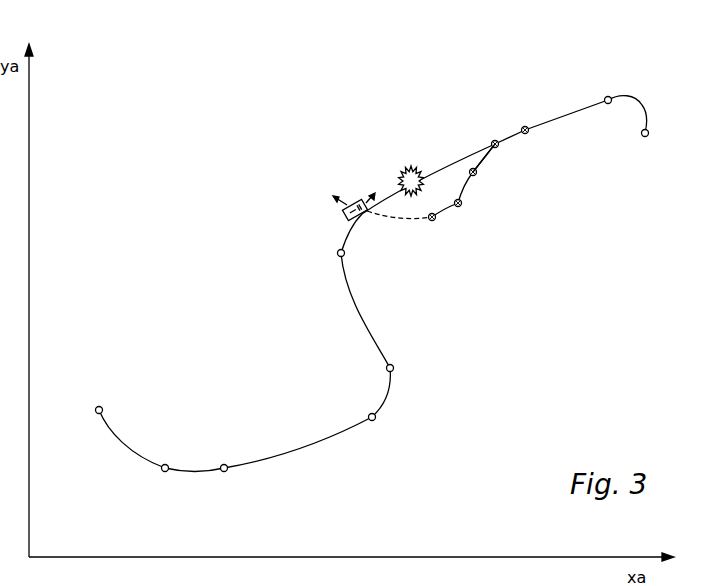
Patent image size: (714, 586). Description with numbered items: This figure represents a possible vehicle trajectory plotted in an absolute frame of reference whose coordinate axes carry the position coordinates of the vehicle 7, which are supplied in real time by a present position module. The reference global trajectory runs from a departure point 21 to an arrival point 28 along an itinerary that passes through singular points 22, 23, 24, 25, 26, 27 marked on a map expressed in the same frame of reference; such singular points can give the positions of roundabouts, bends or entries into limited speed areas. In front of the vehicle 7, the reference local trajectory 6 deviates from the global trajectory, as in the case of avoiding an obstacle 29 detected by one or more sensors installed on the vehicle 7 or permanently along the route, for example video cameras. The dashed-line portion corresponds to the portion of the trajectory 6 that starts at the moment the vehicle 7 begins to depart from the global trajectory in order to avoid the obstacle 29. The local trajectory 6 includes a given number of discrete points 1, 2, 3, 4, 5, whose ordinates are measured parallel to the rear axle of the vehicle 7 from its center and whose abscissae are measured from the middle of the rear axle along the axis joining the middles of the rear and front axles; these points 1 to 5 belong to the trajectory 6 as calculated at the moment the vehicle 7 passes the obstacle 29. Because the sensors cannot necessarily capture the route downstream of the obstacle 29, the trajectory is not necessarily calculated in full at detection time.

The discrete point 1 is at (430, 220).
The discrete point 2 is at (456, 200).
The discrete point 3 is at (472, 169).
The discrete point 4 is at (496, 147).
The discrete point 5 is at (525, 127).
The reference local trajectory 6 is at (479, 153).
The vehicle 7 is at (353, 201).
The departure point 21 is at (99, 406).
The singular point 22 is at (165, 471).
The singular point 23 is at (224, 465).
The singular point 24 is at (375, 419).
The singular point 25 is at (391, 365).
The singular point 26 is at (339, 251).
The singular point 27 is at (606, 103).
The arrival point 28 is at (647, 136).
The obstacle 29 is at (409, 165).